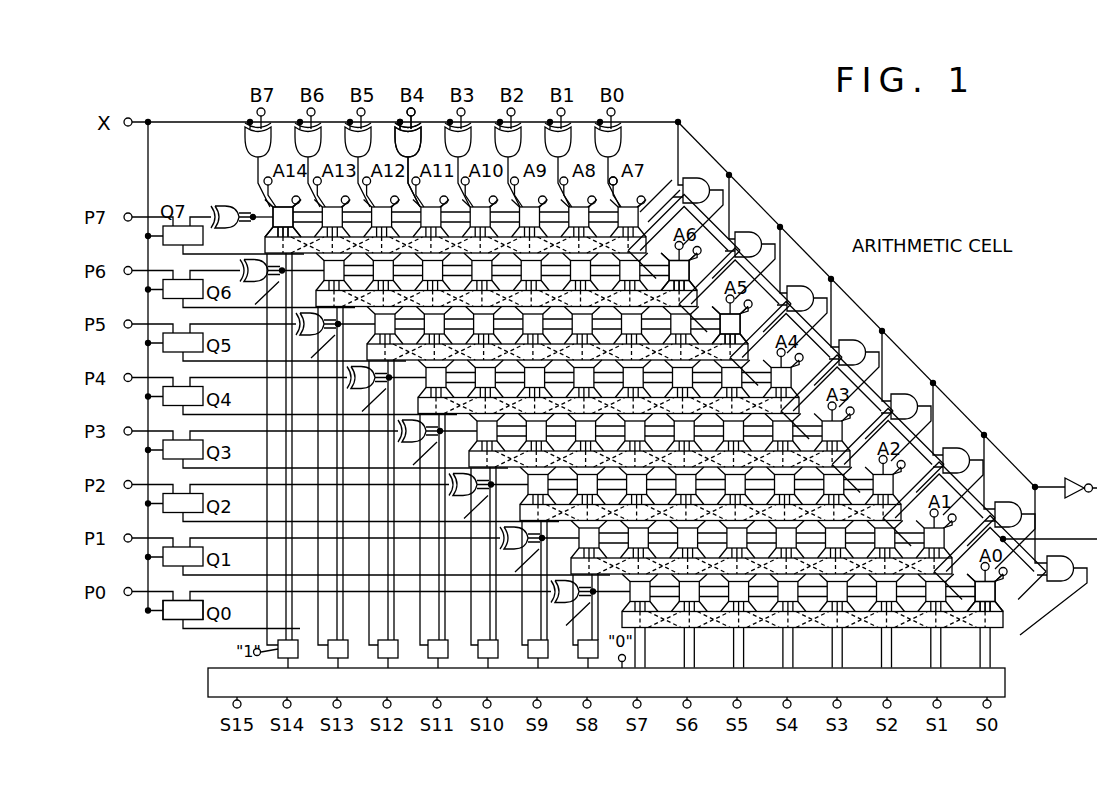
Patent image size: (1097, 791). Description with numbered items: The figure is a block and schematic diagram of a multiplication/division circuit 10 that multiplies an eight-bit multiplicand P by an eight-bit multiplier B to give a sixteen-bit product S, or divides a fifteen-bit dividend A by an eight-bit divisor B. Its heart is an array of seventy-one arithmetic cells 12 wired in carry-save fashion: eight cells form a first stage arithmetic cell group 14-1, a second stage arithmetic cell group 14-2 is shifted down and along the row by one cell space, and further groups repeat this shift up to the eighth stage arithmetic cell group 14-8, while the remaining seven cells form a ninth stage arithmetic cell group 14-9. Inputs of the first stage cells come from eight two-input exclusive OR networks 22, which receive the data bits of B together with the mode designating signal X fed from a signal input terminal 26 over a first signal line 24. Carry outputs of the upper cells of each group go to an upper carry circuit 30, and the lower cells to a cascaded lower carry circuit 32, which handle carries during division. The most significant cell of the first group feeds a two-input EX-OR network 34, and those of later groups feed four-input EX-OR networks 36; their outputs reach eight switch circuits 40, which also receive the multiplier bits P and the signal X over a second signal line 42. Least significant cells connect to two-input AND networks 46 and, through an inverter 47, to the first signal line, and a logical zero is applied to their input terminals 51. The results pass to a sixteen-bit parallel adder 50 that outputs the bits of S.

The multiplication/division circuit 10 is at (905, 345).
The arithmetic cell 12 is at (740, 322).
The first stage arithmetic cell group 14-1 is at (269, 207).
The second stage arithmetic cell group 14-2 is at (690, 269).
The eighth stage arithmetic cell group 14-8 is at (1000, 610).
The ninth stage arithmetic cell group 14-9 is at (262, 680).
The 2-input exclusive OR network 22 is at (422, 138).
The first signal line 24 is at (203, 119).
The signal input terminal 26 is at (130, 114).
The upper carry circuit 30 is at (702, 648).
The lower carry circuit 32 is at (901, 648).
The 2-input exclusive OR network 34 is at (233, 205).
The 4-input exclusive OR network 36 is at (282, 283).
The switch circuit 40 is at (170, 624).
The second signal line 42 is at (150, 150).
The 2-input AND network 46 is at (919, 406).
The inverter 47 is at (1076, 483).
The 16-bit parallel adder 50 is at (1006, 682).
The input terminal 51 is at (600, 198).